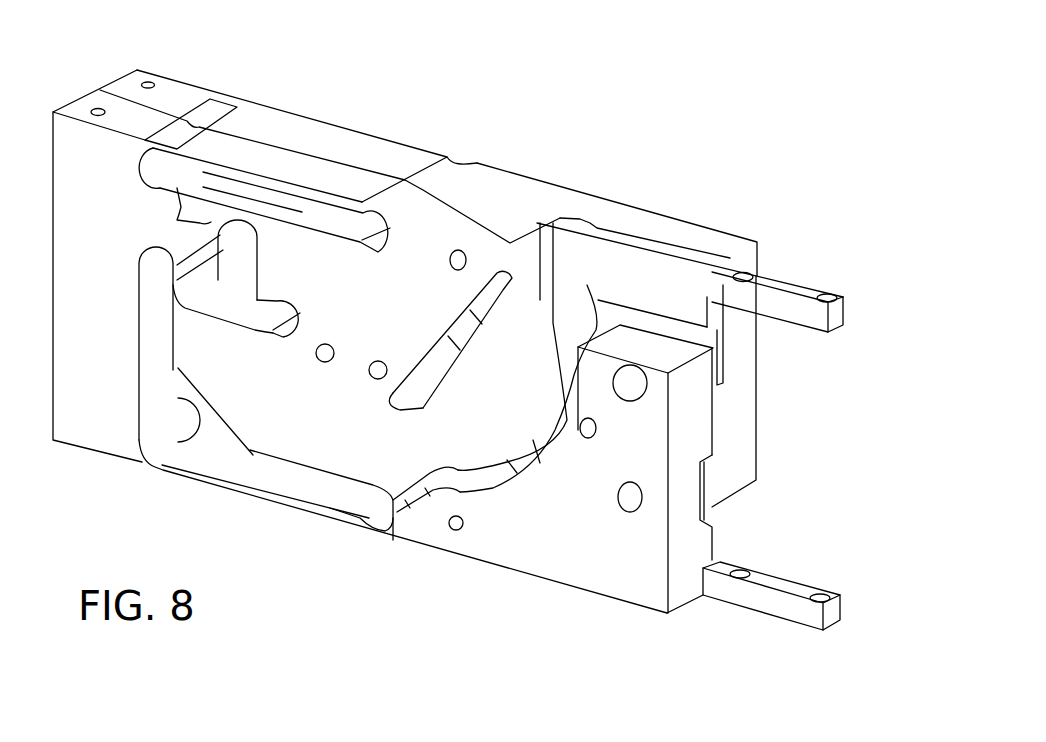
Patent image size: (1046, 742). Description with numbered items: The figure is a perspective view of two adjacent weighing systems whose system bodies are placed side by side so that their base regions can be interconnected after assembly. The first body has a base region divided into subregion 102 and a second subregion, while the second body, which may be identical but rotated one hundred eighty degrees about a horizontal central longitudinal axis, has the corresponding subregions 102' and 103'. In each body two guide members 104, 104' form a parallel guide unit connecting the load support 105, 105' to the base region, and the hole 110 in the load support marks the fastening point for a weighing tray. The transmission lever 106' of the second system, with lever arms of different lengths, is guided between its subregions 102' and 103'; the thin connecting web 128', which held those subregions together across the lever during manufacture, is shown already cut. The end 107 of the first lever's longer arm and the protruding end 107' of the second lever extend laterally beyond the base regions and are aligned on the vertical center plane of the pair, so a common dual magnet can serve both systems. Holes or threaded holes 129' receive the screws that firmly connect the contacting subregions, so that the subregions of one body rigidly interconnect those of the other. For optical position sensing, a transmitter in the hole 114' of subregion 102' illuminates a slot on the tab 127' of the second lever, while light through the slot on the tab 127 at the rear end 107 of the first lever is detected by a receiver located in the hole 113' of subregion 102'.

The subregion of the base region 102 is at (660, 236).
The subregion of the base region 102' is at (403, 425).
The subregion of the base region 103' is at (488, 179).
The guide members 104 is at (288, 295).
The guide members 104' is at (264, 313).
The load support 105 is at (202, 102).
The load support 105' is at (97, 281).
The transmission lever 106' is at (321, 505).
The end of the longer lever arm 107 is at (753, 601).
The end of the transmission lever 107' is at (701, 255).
The hole 110 is at (151, 84).
The hole 113' is at (608, 559).
The hole 114' is at (700, 469).
The tab 127 is at (752, 507).
The tab 127' is at (771, 391).
The connecting web 128' is at (437, 430).
The holes or threaded holes 129' is at (456, 365).